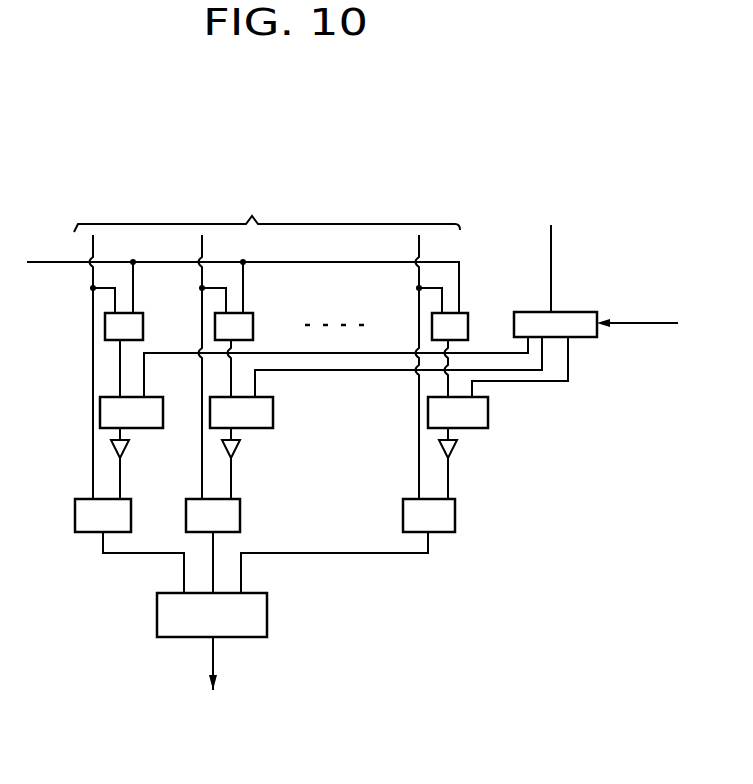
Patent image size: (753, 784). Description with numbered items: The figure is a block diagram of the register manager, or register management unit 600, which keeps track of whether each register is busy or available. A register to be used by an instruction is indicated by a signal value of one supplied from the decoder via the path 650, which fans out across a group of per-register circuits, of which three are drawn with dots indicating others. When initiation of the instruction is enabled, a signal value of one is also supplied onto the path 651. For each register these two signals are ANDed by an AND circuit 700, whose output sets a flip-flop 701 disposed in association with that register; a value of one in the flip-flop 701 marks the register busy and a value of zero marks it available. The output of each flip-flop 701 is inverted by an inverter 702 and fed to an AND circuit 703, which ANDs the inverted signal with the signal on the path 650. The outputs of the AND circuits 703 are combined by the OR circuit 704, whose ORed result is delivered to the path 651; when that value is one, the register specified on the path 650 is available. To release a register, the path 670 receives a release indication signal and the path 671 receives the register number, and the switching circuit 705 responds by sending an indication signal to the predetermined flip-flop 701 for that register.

The register management unit 600 is at (356, 377).
The path 650 is at (267, 209).
The path 651 is at (241, 474).
The AND circuit 700 is at (314, 311).
The flip-flop 701 is at (324, 396).
The inverter 702 is at (313, 463).
The AND circuit 703 is at (295, 501).
The OR circuit 704 is at (265, 584).
The switching circuit 705 is at (387, 338).
The path 670 is at (581, 268).
The path 671 is at (643, 309).